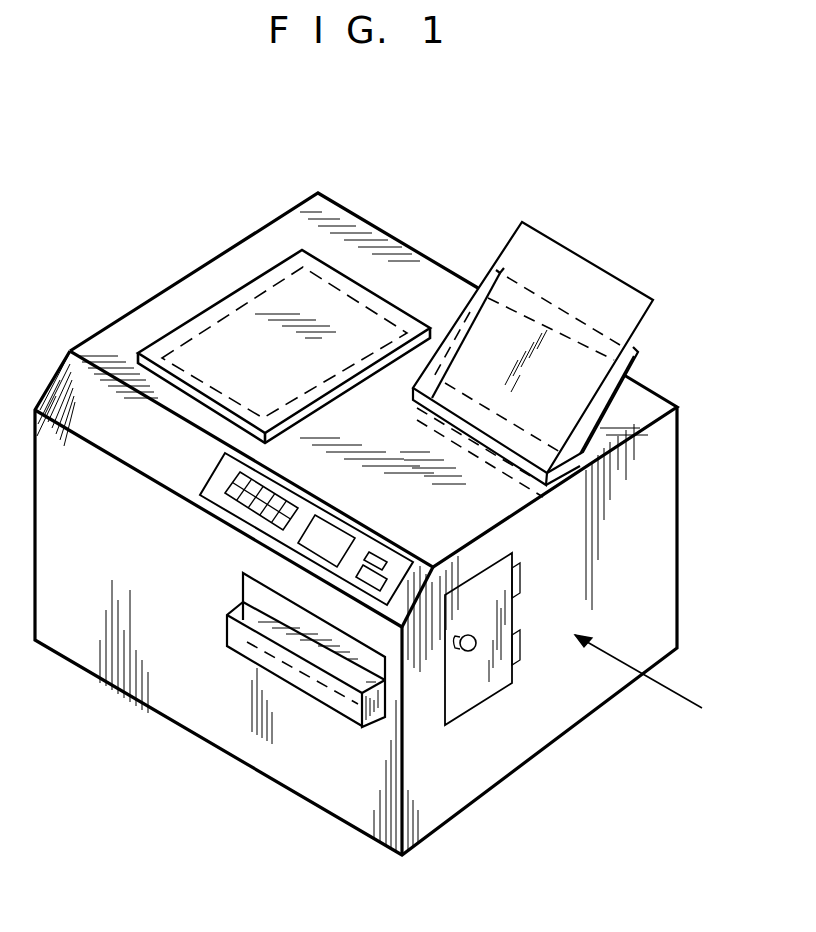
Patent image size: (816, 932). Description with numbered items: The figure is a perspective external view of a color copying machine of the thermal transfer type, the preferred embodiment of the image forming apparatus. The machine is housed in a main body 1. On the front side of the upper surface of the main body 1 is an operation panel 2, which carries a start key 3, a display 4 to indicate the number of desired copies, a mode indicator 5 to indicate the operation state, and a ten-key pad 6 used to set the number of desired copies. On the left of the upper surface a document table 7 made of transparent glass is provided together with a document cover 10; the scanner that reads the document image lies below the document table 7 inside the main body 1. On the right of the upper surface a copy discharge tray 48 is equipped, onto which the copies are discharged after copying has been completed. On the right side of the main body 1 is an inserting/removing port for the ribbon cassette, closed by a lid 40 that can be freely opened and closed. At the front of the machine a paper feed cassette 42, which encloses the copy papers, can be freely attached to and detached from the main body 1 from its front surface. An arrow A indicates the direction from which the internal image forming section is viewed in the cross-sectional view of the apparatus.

The main body 1 is at (540, 748).
The operation panel 2 is at (218, 475).
The start key 3 is at (370, 582).
The display 4 is at (388, 561).
The mode indicator 5 is at (325, 552).
The ten-key pad 6 is at (243, 502).
The document table 7 is at (207, 328).
The document cover 10 is at (267, 287).
The lid 40 is at (475, 700).
The paper feed cassette 42 is at (310, 693).
The copy discharge tray 48 is at (593, 273).
The arrow A is at (643, 671).